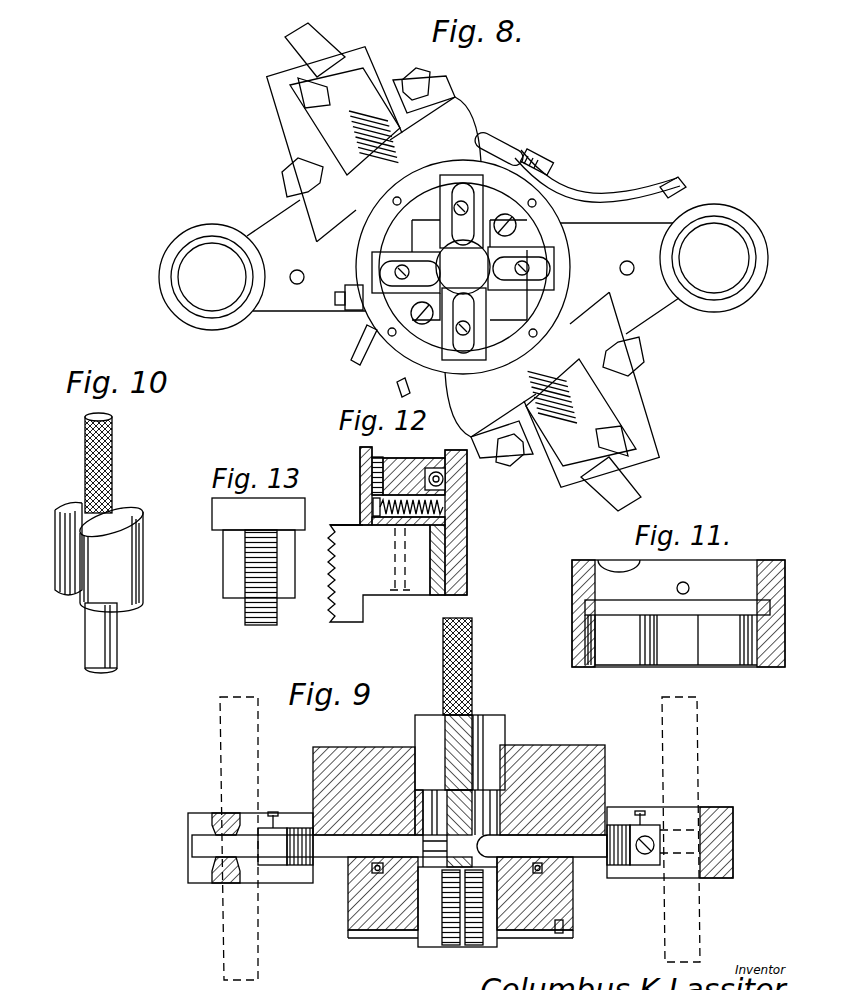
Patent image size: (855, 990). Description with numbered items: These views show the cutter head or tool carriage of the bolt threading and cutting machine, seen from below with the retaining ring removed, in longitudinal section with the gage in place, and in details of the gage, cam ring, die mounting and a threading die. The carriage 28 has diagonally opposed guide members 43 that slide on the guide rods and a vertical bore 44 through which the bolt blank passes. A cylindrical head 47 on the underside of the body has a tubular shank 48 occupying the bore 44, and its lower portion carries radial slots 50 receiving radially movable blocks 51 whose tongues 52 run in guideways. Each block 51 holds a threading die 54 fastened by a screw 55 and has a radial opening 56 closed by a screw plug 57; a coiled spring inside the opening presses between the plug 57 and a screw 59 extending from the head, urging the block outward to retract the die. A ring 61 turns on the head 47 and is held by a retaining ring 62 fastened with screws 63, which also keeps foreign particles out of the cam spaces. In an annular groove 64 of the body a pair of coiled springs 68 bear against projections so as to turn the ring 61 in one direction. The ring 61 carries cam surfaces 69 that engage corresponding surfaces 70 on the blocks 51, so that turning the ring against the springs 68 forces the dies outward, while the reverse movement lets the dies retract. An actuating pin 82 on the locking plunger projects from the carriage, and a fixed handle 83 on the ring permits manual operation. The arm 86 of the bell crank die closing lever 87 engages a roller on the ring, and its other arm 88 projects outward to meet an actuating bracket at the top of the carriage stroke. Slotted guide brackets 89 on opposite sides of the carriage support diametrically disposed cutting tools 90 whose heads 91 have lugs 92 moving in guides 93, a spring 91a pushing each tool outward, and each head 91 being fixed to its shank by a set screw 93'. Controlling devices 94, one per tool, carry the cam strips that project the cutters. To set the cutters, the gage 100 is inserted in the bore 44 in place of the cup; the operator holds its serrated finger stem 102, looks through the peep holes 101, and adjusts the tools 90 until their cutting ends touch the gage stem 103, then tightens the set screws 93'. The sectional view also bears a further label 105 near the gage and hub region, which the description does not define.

In FIG. 8, the carriage 28 is at (359, 204).
In FIG. 9, the carriage 28 is at (580, 745).
In FIG. 8, the guide members 43 is at (188, 234).
In FIG. 9, the vertical bore 44 is at (413, 808).
In FIG. 9, the head 47 is at (542, 873).
In FIG. 9, the tubular shank 48 is at (403, 807).
In FIG. 8, the radial slots 50 is at (450, 213).
In FIG. 9, the radial slots 50 is at (412, 940).
In FIG. 8, the radially movable blocks 51 is at (519, 284).
In FIG. 13, the radially movable blocks 51 is at (227, 537).
In FIG. 12, the radially movable blocks 51 is at (447, 555).
In FIG. 13, the tongues 52 is at (227, 503).
In FIG. 8, the threading die 54 is at (463, 267).
In FIG. 13, the threading die 54 is at (263, 600).
In FIG. 12, the threading die 54 is at (347, 603).
In FIG. 9, the threading die 54 is at (437, 948).
In FIG. 8, the screw 55 is at (362, 272).
In FIG. 12, the radial opening 56 is at (447, 527).
In FIG. 12, the screw plug 57 is at (443, 510).
In FIG. 12, the screw 59 is at (377, 480).
In FIG. 8, the ring 61 is at (568, 288).
In FIG. 12, the ring 61 is at (468, 498).
In FIG. 11, the ring 61 is at (573, 592).
In FIG. 9, the retaining ring 62 is at (548, 933).
In FIG. 9, the screws 63 is at (560, 937).
In FIG. 9, the annular groove 64 is at (363, 903).
In FIG. 9, the coiled springs 68 is at (372, 885).
In FIG. 8, the cam surfaces 69 is at (566, 236).
In FIG. 11, the cam surfaces 69 is at (623, 655).
In FIG. 8, the surfaces 70 is at (393, 217).
In FIG. 8, the actuating pin 82 is at (363, 335).
In FIG. 8, the fixed handle 83 is at (408, 382).
In FIG. 8, the arm 86 is at (523, 163).
In FIG. 8, the bell crank die closing lever 87 is at (558, 183).
In FIG. 8, the arm 88 is at (680, 185).
In FIG. 8, the guide brackets 89 is at (292, 106).
In FIG. 9, the guide brackets 89 is at (710, 806).
In FIG. 9, the cutting tools 90 is at (399, 845).
In FIG. 8, the heads 91 is at (573, 463).
In FIG. 9, the heads 91 is at (282, 863).
In FIG. 8, the spring 91a is at (348, 137).
In FIG. 9, the spring 91a is at (307, 870).
In FIG. 8, the lugs 92 is at (620, 428).
In FIG. 9, the lugs 92 is at (237, 883).
In FIG. 8, the guides 93 is at (591, 436).
In FIG. 9, the set screw 93' is at (486, 800).
In FIG. 9, the controlling devices 94 is at (227, 723).
In FIG. 10, the gage 100 is at (112, 556).
In FIG. 9, the gage 100 is at (505, 713).
In FIG. 10, the peep holes 101 is at (68, 578).
In FIG. 9, the peep holes 101 is at (500, 740).
In FIG. 10, the serrated finger stem 102 is at (93, 466).
In FIG. 9, the serrated finger stem 102 is at (472, 668).
In FIG. 10, the gage stem 103 is at (112, 617).
In FIG. 9, the bore 105 is at (457, 807).